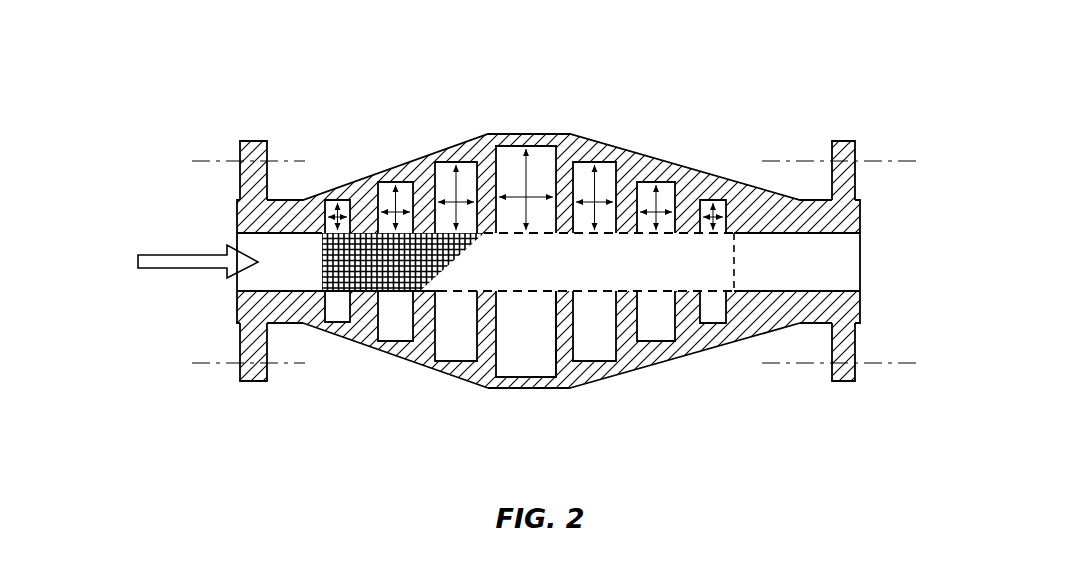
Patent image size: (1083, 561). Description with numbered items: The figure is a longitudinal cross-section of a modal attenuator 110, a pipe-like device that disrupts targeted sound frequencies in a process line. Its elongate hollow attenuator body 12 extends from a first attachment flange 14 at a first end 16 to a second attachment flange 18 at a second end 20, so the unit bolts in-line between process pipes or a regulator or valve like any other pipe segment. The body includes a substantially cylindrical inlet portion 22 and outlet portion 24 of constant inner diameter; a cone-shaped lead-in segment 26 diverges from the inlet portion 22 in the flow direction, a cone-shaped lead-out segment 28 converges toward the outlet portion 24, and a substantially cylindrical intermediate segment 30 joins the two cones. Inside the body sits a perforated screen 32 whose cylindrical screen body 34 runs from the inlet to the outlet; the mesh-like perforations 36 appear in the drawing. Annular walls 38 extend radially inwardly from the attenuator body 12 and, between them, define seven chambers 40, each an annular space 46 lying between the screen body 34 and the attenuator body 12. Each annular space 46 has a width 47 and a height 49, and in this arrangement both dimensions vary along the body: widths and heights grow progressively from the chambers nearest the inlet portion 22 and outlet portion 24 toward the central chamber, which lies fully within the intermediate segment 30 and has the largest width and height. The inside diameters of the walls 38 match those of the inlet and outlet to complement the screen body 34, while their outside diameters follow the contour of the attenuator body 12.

The modal attenuator 110 is at (720, 72).
The attenuator body 12 is at (460, 382).
The first attachment flange 14 is at (250, 382).
The first end 16 is at (237, 307).
The second attachment flange 18 is at (843, 382).
The second end 20 is at (860, 313).
The inlet portion 22 is at (279, 273).
The outlet portion 24 is at (815, 273).
The lead-in segment 26 is at (400, 355).
The lead-out segment 28 is at (703, 353).
The intermediate segment 30 is at (525, 390).
The perforated screen 32 is at (338, 305).
The screen body 34 is at (377, 293).
The porous mesh element 36 is at (412, 278).
The annular walls 38 is at (630, 290).
The chambers 40 is at (545, 175).
The annular space 46 is at (557, 352).
The width 47 is at (514, 192).
The height 49 is at (527, 165).